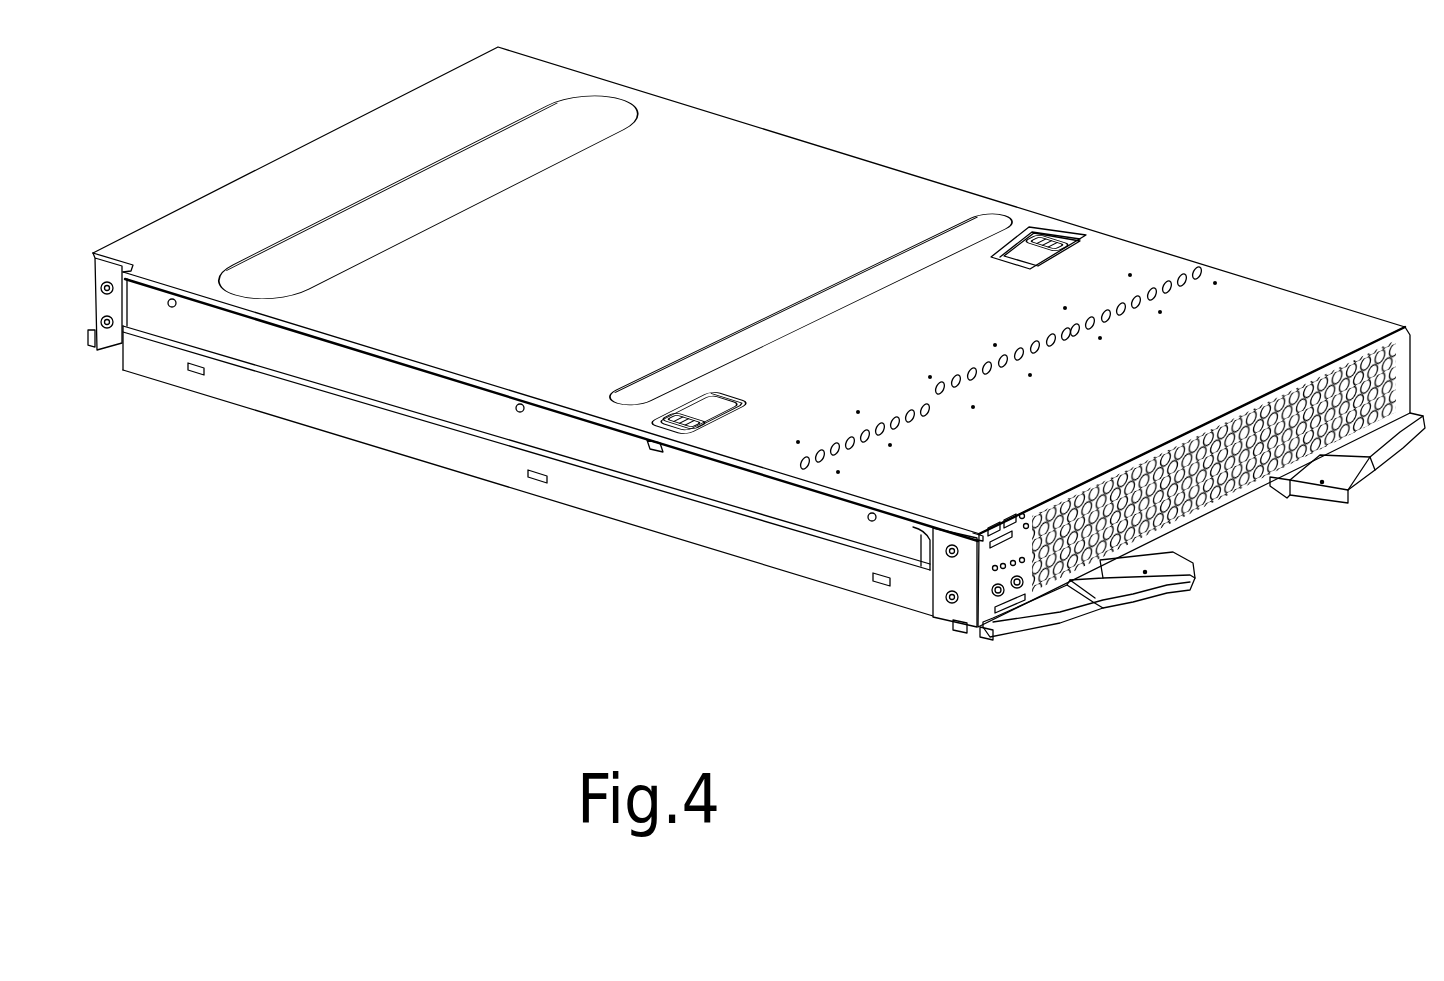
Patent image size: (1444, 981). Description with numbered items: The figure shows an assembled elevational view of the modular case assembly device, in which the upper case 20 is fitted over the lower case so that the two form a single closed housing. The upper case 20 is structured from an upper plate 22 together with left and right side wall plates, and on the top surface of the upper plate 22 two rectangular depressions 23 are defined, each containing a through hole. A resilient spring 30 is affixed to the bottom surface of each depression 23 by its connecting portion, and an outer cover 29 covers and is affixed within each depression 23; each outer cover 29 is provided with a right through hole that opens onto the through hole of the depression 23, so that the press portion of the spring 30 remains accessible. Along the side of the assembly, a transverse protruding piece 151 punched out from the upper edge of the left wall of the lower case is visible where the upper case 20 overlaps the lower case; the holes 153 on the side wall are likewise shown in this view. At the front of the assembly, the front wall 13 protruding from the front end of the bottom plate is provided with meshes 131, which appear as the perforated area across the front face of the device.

The front wall 13 is at (1183, 525).
The upper case 20 is at (1232, 270).
The upper plate 22 is at (838, 165).
The rectangular depression 23 is at (743, 401).
The outer cover 29 is at (720, 402).
The resilient spring 30 is at (682, 417).
The mesh 131 is at (1213, 497).
The transverse protruding piece 151 is at (657, 445).
The positioning hole 153 is at (520, 412).